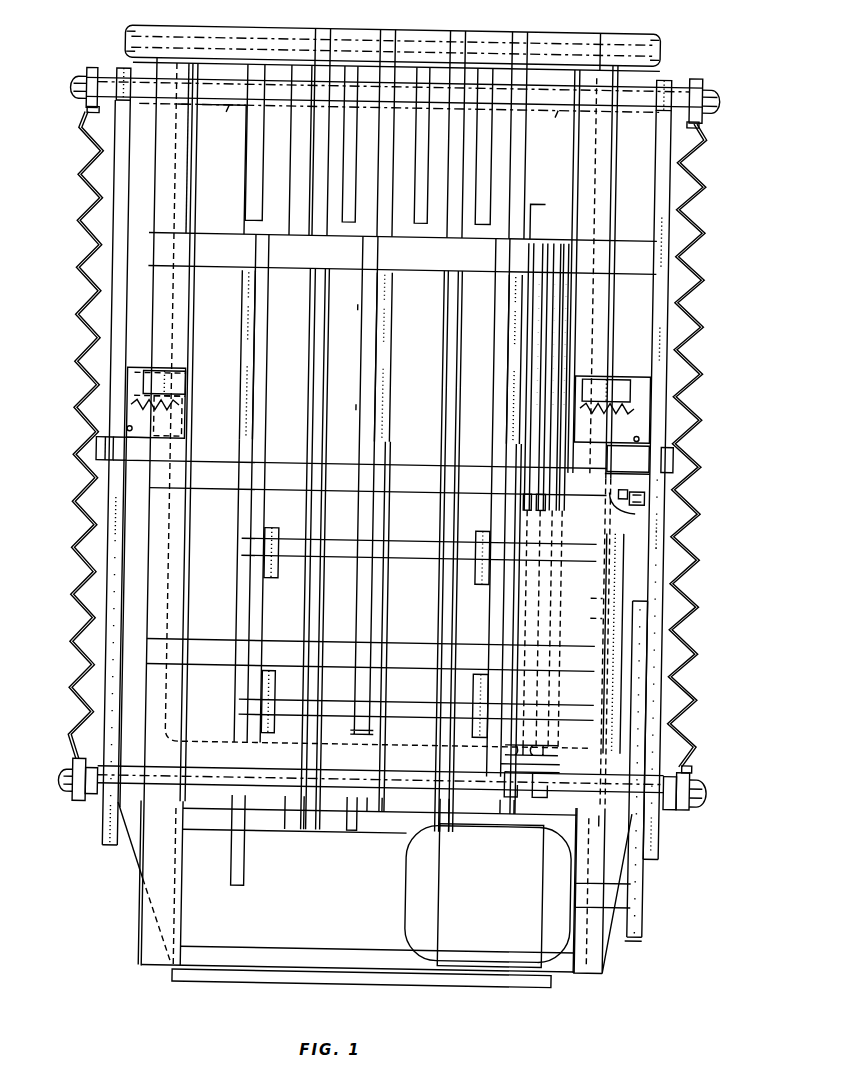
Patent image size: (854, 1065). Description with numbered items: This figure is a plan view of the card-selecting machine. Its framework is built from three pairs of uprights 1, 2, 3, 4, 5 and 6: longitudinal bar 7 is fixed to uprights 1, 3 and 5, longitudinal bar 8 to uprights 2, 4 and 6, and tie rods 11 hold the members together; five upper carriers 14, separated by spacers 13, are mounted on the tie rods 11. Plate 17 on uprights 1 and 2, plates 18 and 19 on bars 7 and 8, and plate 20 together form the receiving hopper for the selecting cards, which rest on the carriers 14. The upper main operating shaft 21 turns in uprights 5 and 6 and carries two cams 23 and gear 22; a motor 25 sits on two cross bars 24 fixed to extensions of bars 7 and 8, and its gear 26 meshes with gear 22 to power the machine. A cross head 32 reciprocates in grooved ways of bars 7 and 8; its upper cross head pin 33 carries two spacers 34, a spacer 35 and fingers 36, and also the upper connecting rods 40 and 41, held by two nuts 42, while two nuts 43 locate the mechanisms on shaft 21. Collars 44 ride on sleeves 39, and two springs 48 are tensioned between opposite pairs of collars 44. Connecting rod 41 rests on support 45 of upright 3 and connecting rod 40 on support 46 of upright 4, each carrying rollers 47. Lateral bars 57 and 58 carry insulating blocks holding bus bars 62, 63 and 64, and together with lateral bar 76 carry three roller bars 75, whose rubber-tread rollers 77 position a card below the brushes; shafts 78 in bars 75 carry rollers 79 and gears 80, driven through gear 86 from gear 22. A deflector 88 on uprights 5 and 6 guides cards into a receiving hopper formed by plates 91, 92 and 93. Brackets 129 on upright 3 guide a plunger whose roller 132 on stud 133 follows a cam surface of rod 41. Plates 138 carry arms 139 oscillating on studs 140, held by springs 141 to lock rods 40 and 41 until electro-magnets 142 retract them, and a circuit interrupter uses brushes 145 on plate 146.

The upright 1 is at (633, 26).
The upright 2 is at (150, 27).
The upright 3 is at (622, 440).
The upright 4 is at (140, 460).
The upright 5 is at (536, 560).
The upright 6 is at (144, 766).
The longitudinal bar 7 is at (612, 144).
The longitudinal bar 8 is at (157, 145).
The tie rods 11 is at (290, 26).
The spacers 13 is at (218, 27).
The upper carriers 14 is at (247, 221).
The plate 17 is at (210, 58).
The plate 18 is at (573, 140).
The plate 19 is at (194, 183).
The plate 20 is at (303, 235).
The upper main operating shaft 21 is at (365, 826).
The gear 22 is at (650, 724).
The cams 23 is at (381, 862).
The cross bars 24 is at (295, 866).
The motor 25 is at (420, 915).
The gear 26 is at (660, 920).
The cross head 32 is at (280, 135).
The upper cross head pin 33 is at (622, 100).
The spacers 34 is at (385, 119).
The spacer 35 is at (378, 100).
The fingers 36 is at (494, 260).
The sleeves 39 is at (110, 72).
The upper connecting rod 40 is at (124, 248).
The upper connecting rod 41 is at (657, 258).
The nuts 42 is at (74, 90).
The nuts 43 is at (73, 784).
The collars 44 is at (88, 78).
The support 45 is at (681, 446).
The support 46 is at (103, 457).
The rollers 47 is at (116, 510).
The springs 48 is at (79, 268).
The lateral bar 57 is at (405, 470).
The lateral bar 58 is at (346, 260).
The bus bar 62 is at (533, 455).
The bus bar 63 is at (540, 503).
The bus bar 64 is at (560, 503).
The roller bars 75 is at (499, 419).
The lateral bar 76 is at (340, 645).
The rollers 77 is at (248, 373).
The shafts 78 is at (418, 540).
The rollers 79 is at (276, 522).
The gears 80 is at (632, 551).
The gear 86 is at (652, 642).
The deflector 88 is at (245, 843).
The plate 91 is at (328, 980).
The plate 92 is at (197, 910).
The plate 93 is at (570, 883).
The brackets 129 is at (645, 505).
The roller 132 is at (655, 488).
The stud 133 is at (660, 481).
The plates 138 is at (133, 369).
The arms 139 is at (133, 407).
The studs 140 is at (131, 428).
The springs 141 is at (168, 408).
The electro-magnets 142 is at (191, 380).
The brushes 145 is at (513, 757).
The plate 146 is at (542, 736).